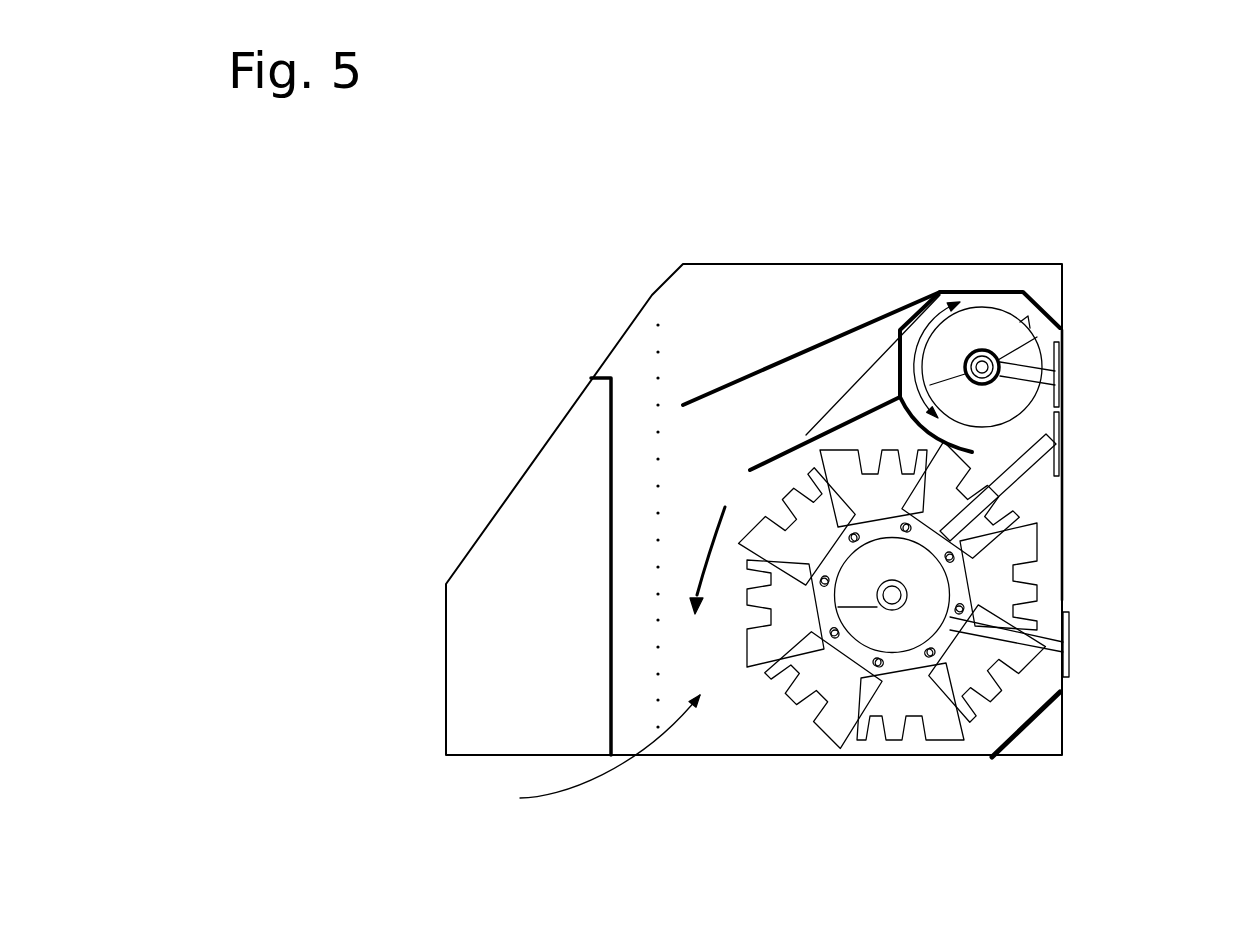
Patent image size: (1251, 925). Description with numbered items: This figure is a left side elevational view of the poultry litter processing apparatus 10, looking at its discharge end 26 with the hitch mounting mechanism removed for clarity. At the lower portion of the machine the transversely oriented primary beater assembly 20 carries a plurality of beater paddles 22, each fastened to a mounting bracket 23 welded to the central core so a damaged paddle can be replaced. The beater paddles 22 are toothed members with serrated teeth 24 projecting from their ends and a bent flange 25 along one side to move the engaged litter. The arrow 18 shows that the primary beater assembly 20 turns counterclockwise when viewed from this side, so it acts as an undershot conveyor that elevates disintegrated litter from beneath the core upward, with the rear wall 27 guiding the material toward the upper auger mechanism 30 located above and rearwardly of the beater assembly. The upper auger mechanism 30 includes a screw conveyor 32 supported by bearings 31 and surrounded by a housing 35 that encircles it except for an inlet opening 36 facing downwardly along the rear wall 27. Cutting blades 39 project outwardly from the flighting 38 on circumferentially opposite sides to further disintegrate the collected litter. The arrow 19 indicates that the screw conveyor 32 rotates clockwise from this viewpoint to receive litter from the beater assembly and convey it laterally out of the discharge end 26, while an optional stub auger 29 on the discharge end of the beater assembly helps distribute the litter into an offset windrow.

The poultry litter processing apparatus 10 is at (988, 155).
The arrow 18 is at (698, 558).
The arrow 19 is at (922, 307).
The primary beater assembly 20 is at (590, 754).
The beater paddles 22 is at (770, 628).
The mounting bracket 23 is at (891, 615).
The teeth 24 is at (1030, 580).
The bent flange 25 is at (963, 730).
The discharge end 26 is at (735, 253).
The rear wall 27 is at (1066, 593).
The stub auger 29 is at (880, 557).
The upper auger mechanism 30 is at (1082, 340).
The bearings 31 is at (995, 375).
The screw conveyor 32 is at (1005, 322).
The housing 35 is at (955, 305).
The inlet opening 36 is at (1008, 448).
The flighting 38 is at (980, 325).
The cutting blades 39 is at (1027, 322).